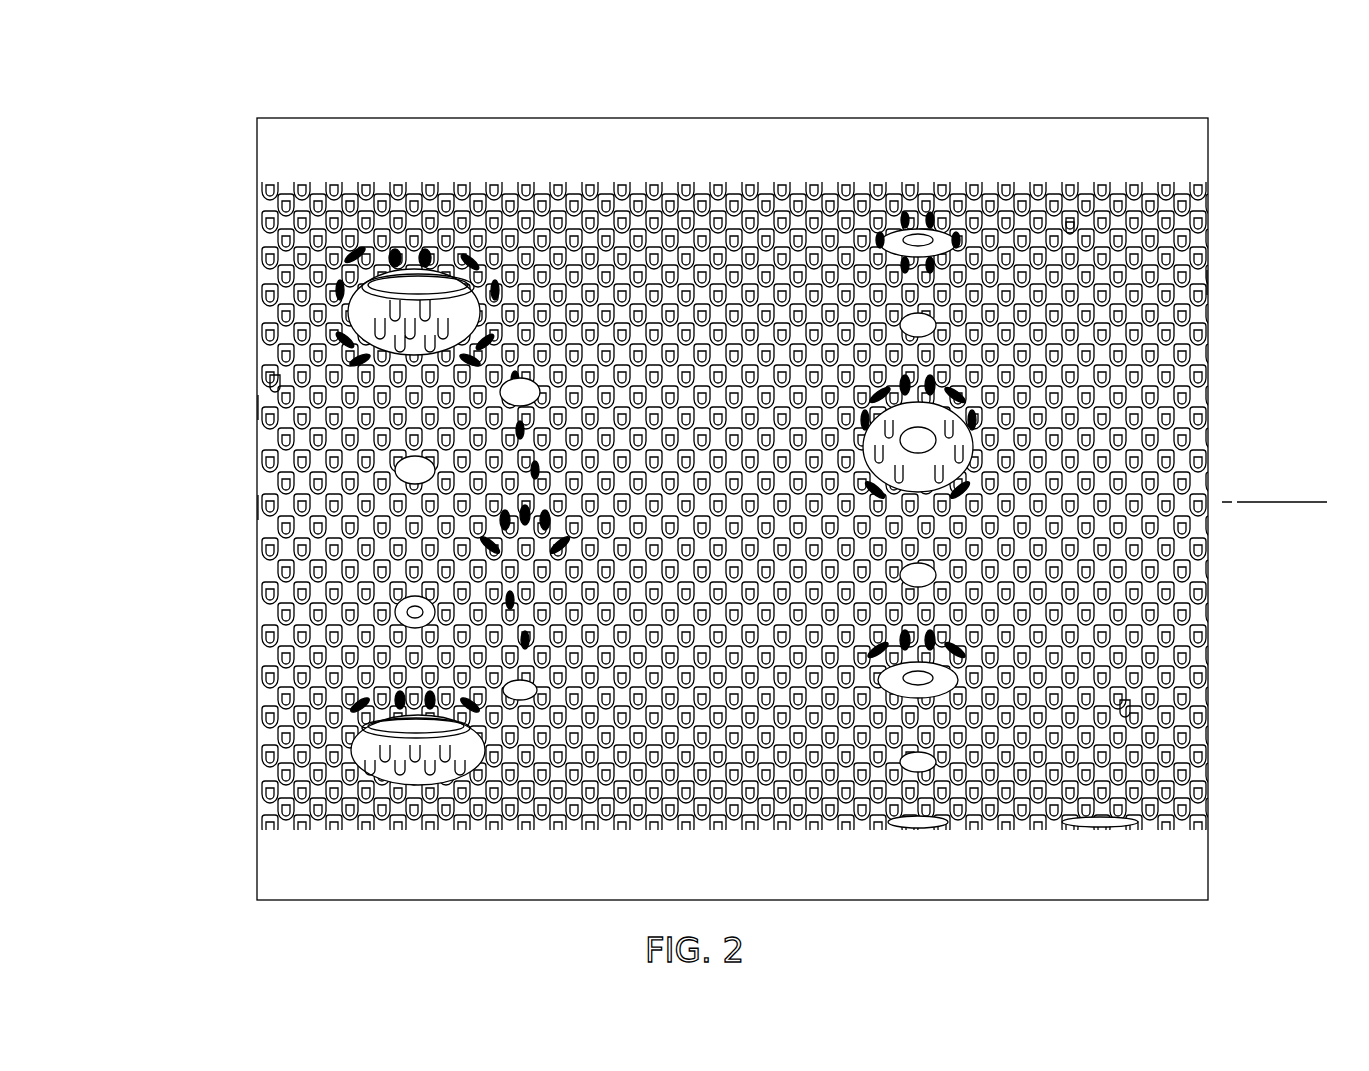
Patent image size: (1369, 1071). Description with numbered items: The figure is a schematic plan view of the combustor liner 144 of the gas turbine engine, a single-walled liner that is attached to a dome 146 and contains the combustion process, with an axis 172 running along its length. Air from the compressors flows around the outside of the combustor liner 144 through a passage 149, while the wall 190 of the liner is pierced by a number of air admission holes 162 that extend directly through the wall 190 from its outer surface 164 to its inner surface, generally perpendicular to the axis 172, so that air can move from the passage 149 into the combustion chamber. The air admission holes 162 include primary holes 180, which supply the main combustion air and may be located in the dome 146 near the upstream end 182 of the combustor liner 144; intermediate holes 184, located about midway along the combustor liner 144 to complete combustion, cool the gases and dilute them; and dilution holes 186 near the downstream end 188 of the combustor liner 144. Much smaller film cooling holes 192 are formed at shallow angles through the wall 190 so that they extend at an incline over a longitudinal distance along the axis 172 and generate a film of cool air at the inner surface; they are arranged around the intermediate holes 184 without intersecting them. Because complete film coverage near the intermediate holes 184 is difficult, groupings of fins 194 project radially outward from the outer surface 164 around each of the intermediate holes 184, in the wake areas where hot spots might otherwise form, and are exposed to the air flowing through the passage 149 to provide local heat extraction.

The combustor liner 144 is at (624, 172).
The dome 146 is at (253, 505).
The passage 149 is at (800, 163).
The air admission holes 162 is at (448, 252).
The outer surface 164 is at (1072, 226).
The axis 172 is at (1296, 502).
The primary holes 180 is at (358, 762).
The upstream end 182 is at (253, 408).
The intermediate holes 184 is at (936, 238).
The dilution holes 186 is at (1105, 808).
The downstream end 188 is at (1210, 282).
The wall 190 is at (715, 765).
The film cooling holes 192 is at (278, 384).
The fins 194 is at (348, 312).